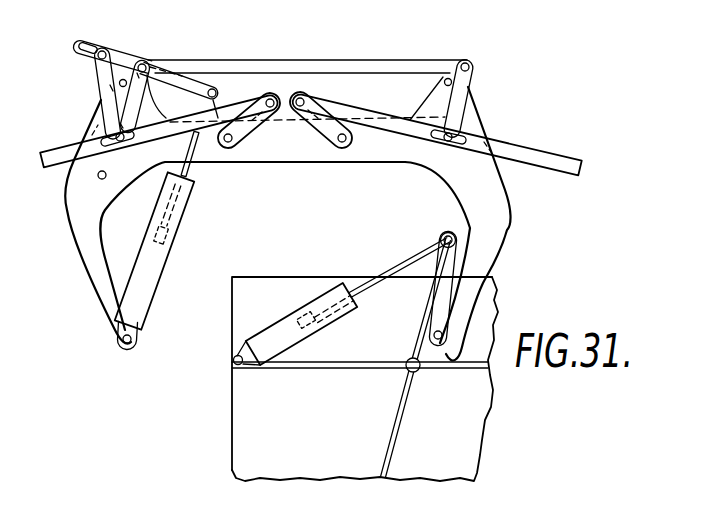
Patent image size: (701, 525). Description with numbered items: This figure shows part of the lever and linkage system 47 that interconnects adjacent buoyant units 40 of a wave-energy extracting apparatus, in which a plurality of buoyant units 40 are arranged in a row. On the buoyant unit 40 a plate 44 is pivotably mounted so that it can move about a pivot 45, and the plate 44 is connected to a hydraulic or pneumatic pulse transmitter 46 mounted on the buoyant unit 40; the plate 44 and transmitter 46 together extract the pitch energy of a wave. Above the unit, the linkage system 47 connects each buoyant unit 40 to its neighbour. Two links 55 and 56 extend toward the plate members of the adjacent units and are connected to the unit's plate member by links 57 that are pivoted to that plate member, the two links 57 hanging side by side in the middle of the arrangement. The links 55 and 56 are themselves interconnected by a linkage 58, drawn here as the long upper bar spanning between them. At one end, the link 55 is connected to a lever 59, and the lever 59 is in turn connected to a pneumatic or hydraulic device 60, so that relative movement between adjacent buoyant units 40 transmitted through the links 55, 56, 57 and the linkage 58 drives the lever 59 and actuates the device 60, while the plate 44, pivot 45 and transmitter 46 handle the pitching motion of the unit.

The buoyant unit 40 is at (230, 452).
The plate 44 is at (425, 318).
The pivot 45 is at (417, 373).
The hydraulic or pneumatic pulse transmitter 46 is at (285, 323).
The linkage system 47 is at (288, 30).
The link 55 is at (59, 147).
The link 56 is at (566, 118).
The links 57 is at (322, 128).
The linkage 58 is at (381, 47).
The lever 59 is at (124, 60).
The pneumatic or hydraulic device 60 is at (148, 282).